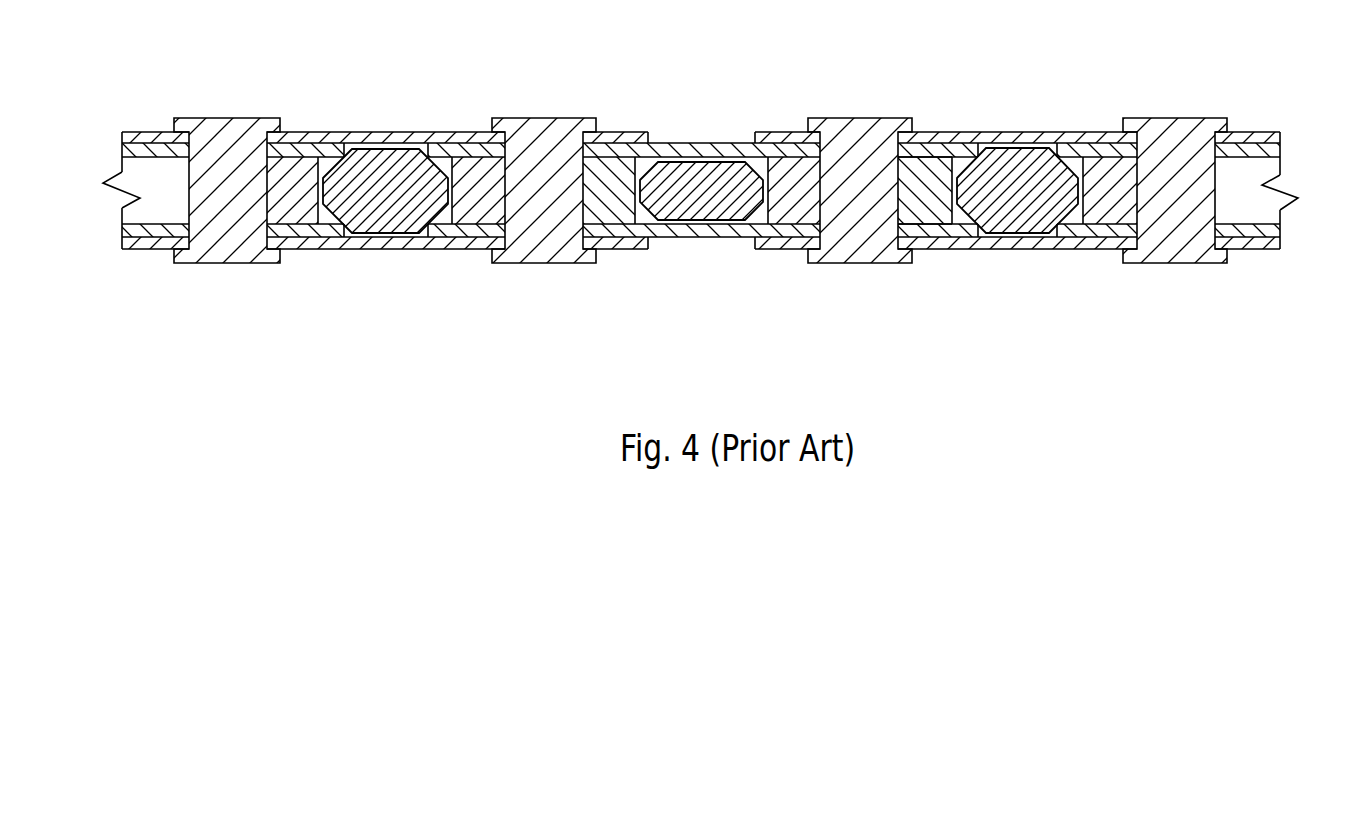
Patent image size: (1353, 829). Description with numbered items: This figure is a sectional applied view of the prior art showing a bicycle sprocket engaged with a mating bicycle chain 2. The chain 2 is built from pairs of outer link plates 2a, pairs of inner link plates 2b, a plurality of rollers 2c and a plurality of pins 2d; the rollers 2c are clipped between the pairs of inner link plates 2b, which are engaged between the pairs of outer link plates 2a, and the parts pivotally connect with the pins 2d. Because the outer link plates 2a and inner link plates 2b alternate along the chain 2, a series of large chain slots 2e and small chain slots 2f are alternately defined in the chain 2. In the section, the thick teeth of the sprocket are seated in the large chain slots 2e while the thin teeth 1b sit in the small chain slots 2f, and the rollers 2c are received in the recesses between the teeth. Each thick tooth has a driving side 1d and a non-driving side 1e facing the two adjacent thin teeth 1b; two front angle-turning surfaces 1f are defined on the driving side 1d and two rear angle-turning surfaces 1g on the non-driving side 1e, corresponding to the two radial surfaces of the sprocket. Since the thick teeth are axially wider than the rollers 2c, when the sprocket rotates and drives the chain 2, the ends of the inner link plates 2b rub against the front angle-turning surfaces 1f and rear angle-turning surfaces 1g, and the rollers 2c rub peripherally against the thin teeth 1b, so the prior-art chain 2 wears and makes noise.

The bicycle chain 2 is at (1258, 126).
The outer link plates 2a is at (768, 138).
The inner link plates 2b is at (697, 148).
The rollers 2c is at (910, 175).
The pins 2d is at (850, 127).
The large chain slots 2e is at (1020, 197).
The small chain slots 2f is at (769, 225).
The thin teeth 1b is at (680, 212).
The driving side 1d is at (926, 167).
The non-driving side 1e is at (1080, 177).
The front angle-turning surfaces 1f is at (954, 222).
The rear angle-turning surfaces 1g is at (1082, 218).